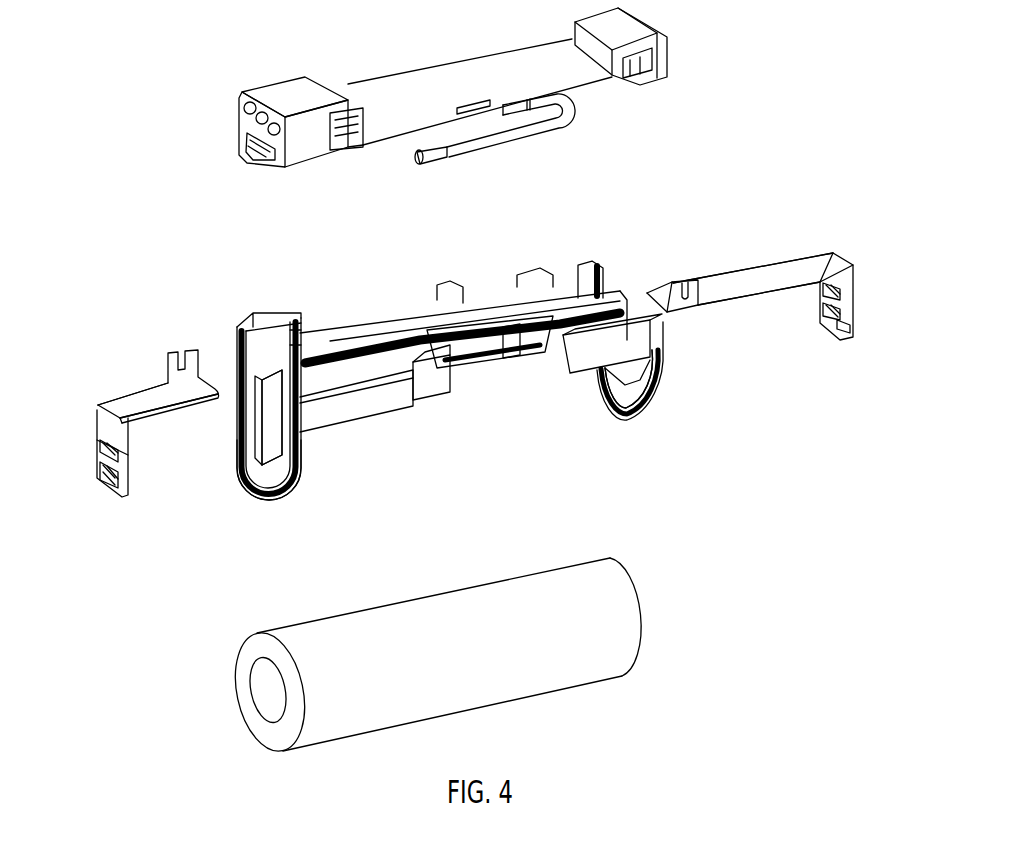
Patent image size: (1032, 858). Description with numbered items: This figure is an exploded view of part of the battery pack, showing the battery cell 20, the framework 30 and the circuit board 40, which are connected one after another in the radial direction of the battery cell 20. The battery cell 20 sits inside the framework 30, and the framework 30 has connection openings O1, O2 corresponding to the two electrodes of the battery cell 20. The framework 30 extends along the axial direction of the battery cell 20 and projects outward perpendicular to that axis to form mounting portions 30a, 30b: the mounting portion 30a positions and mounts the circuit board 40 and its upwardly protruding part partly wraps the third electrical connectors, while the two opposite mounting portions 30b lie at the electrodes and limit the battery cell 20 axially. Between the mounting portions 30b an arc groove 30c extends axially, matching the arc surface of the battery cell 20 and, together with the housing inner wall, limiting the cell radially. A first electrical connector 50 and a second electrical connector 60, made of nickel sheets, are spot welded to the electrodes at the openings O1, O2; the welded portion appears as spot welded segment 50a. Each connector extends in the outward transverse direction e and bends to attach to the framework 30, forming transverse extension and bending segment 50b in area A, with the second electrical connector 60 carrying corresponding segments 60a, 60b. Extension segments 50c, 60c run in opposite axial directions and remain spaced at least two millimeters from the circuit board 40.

The battery cell 20 is at (487, 703).
The framework 30 is at (404, 314).
The mounting portion 30a is at (275, 316).
The mounting portion 30b is at (298, 478).
The arc groove 30c is at (425, 397).
The connection opening O1 is at (250, 447).
The connection opening O2 is at (610, 388).
The circuit board 40 is at (422, 70).
The first electrical connector 50 is at (129, 410).
The spot welded segment 50a is at (100, 485).
The transverse extension and bending segment 50b is at (100, 453).
The extension segment 50c is at (115, 400).
The area A is at (136, 473).
The second electrical connector 60 is at (780, 282).
The first engaging portion of second clip 60a is at (853, 325).
The second engaging portion of second clip 60b is at (853, 302).
The extension segment 60c is at (804, 225).
The outward transverse direction e is at (215, 545).